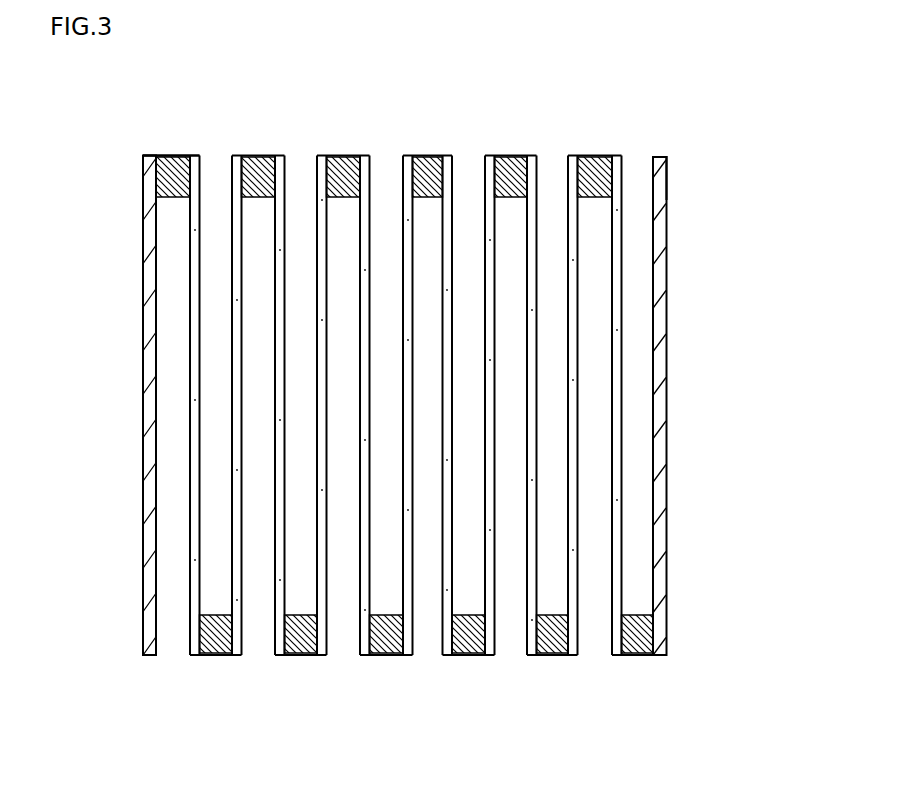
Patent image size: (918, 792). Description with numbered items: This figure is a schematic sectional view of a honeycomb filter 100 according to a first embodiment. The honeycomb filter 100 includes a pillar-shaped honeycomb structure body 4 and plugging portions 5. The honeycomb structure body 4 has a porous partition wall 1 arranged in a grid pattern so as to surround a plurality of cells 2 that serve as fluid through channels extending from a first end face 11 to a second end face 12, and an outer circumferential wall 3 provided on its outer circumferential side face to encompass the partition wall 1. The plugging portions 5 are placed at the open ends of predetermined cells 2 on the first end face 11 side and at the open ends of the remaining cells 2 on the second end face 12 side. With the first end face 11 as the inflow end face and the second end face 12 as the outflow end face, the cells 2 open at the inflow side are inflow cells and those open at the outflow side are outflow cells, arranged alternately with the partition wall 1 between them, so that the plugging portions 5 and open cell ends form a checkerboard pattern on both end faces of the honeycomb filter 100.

The honeycomb filter 100 is at (703, 37).
The partition wall 1 is at (529, 175).
The cells 2 is at (461, 218).
The outer circumferential wall 3 is at (152, 300).
The honeycomb structure body 4 is at (676, 163).
The plugging portions 5 is at (175, 178).
The first end face 11 is at (163, 136).
The second end face 12 is at (177, 669).